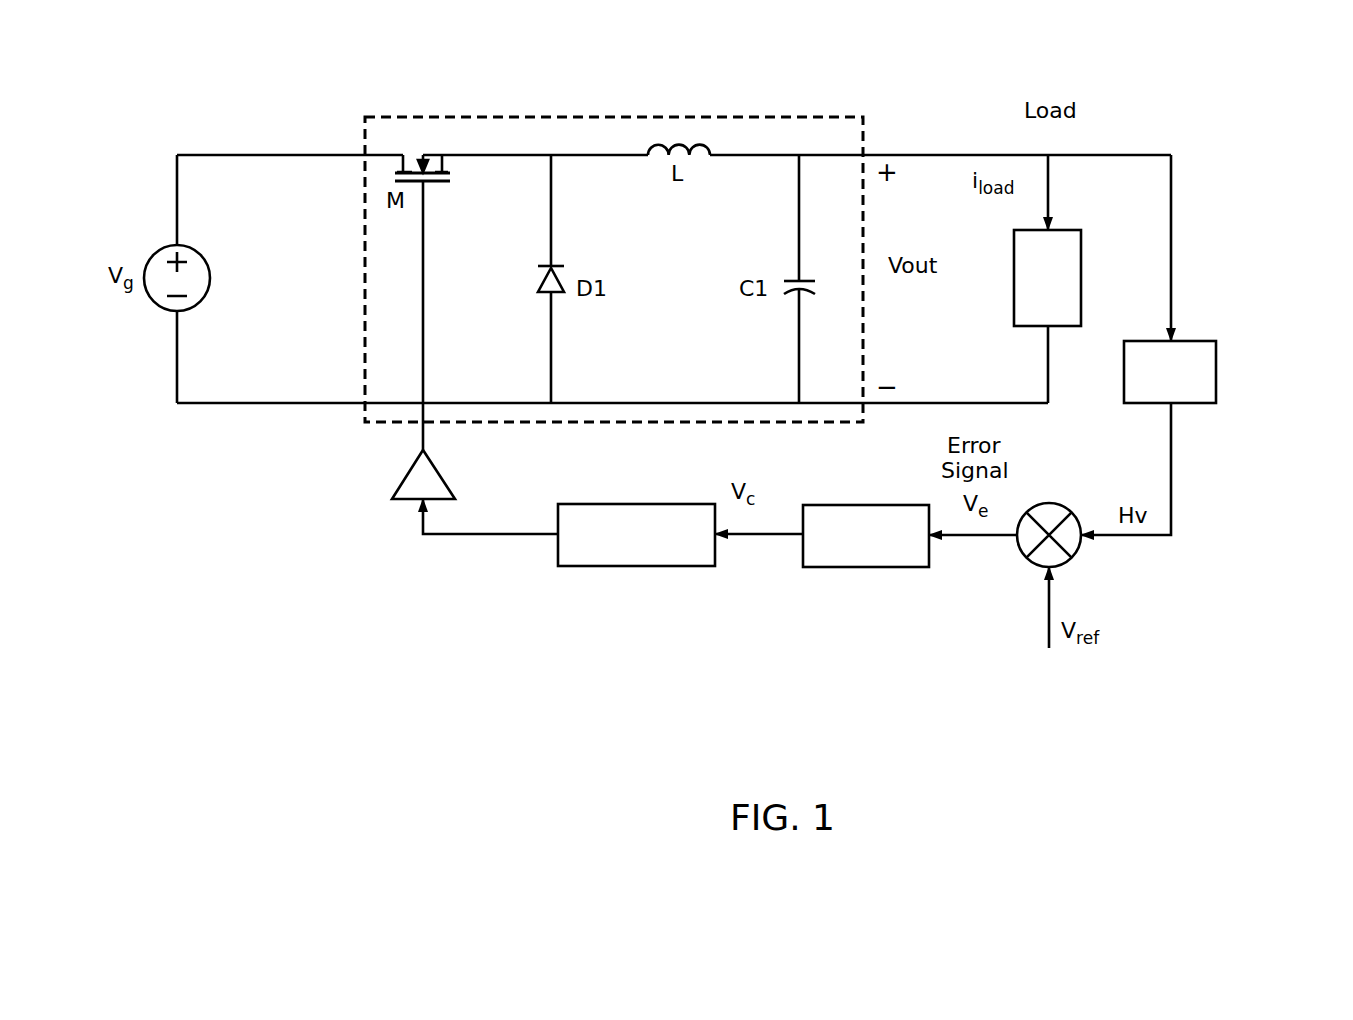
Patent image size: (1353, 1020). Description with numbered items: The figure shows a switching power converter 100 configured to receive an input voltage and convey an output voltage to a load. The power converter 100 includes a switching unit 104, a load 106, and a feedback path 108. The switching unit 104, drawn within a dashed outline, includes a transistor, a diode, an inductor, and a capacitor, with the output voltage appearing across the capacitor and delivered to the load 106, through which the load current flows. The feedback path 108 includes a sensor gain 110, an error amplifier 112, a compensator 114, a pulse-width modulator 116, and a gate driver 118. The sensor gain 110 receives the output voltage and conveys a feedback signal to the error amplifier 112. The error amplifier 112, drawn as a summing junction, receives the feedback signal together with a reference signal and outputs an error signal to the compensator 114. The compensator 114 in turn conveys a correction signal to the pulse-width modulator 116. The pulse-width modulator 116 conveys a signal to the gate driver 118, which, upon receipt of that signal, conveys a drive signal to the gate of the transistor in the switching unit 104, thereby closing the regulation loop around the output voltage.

The switching power converter 100 is at (1266, 118).
The switching unit 104 is at (790, 116).
The load 106 is at (1065, 230).
The feedback path 108 is at (1214, 511).
The sensor gain 110 is at (1195, 341).
The error amplifier 112 is at (1033, 563).
The compensator 114 is at (855, 505).
The pulse-width modulator 116 is at (640, 504).
The gate driver 118 is at (440, 478).